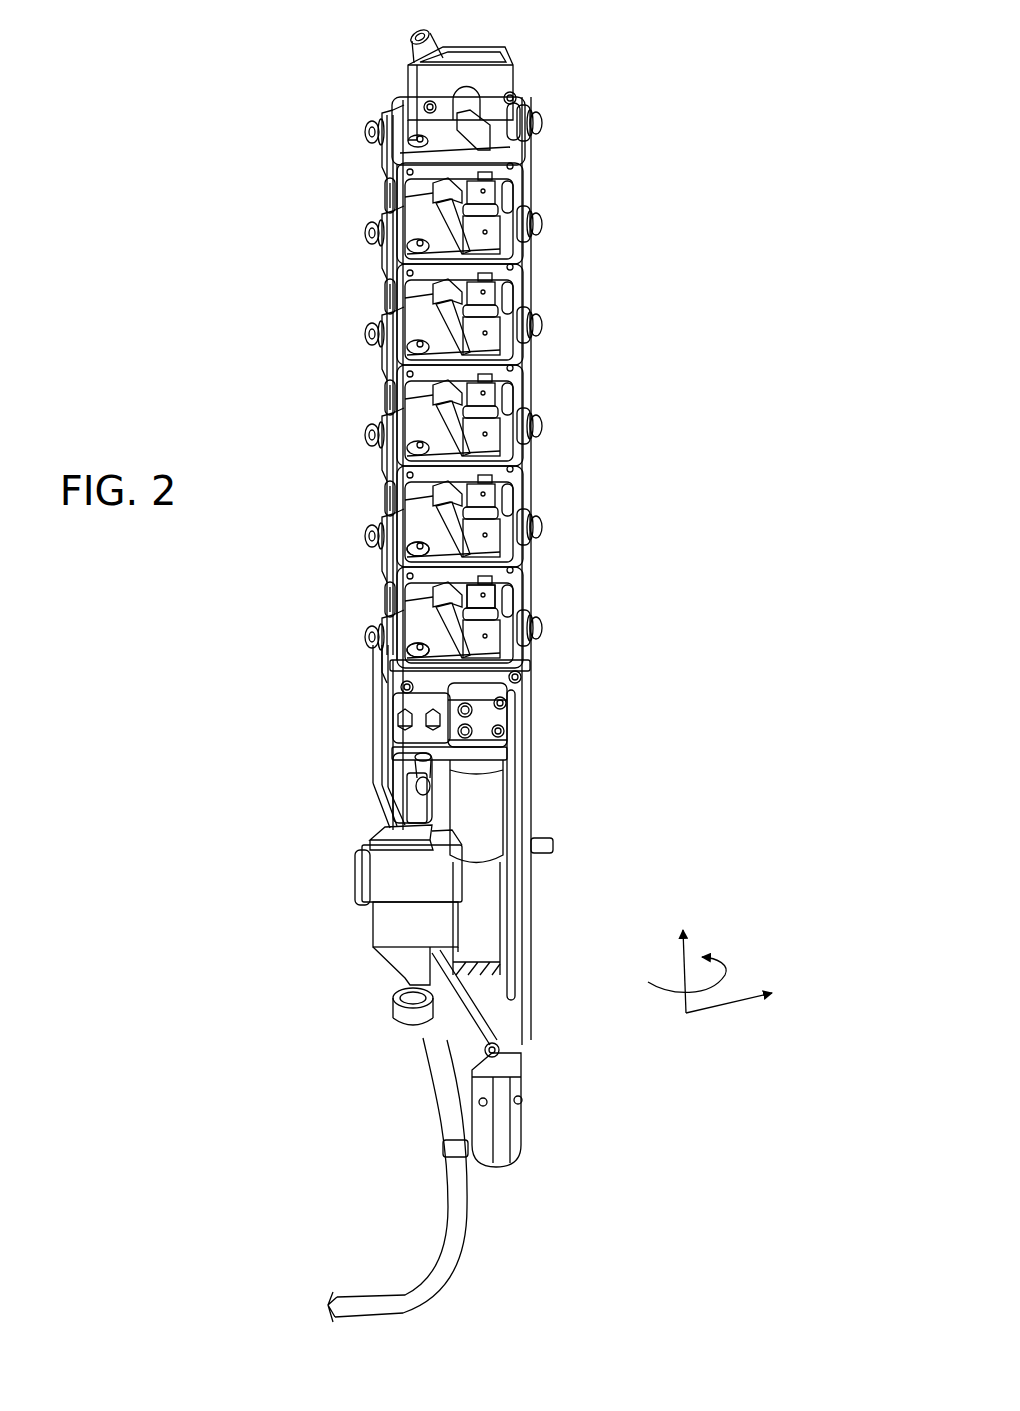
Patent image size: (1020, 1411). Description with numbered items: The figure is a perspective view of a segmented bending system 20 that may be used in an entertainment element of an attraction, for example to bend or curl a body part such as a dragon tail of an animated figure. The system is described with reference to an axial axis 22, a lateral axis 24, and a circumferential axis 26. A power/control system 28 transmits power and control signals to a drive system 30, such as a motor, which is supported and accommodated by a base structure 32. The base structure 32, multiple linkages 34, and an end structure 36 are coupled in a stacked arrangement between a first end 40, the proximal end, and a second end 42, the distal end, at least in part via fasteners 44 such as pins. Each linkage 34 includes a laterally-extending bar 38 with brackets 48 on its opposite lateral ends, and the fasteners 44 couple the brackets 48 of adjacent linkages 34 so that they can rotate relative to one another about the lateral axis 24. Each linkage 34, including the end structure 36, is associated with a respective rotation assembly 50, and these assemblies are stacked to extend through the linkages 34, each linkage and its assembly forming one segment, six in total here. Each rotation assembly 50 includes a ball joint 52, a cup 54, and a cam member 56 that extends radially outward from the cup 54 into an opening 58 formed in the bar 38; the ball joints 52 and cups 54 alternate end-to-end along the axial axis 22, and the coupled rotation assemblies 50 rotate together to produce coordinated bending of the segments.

The bending system 20 is at (673, 78).
The axial axis 22 is at (680, 956).
The lateral axis 24 is at (723, 1005).
The circumferential axis 26 is at (674, 995).
The power/control system 28 is at (345, 925).
The drive system 30 is at (548, 795).
The base structure 32 is at (380, 740).
The linkages 34 is at (383, 157).
The end structure 36 is at (408, 63).
The bar 38 is at (497, 167).
The first end 40 is at (495, 1192).
The second end 42 is at (505, 28).
The fasteners 44 is at (366, 130).
The brackets 48 is at (388, 192).
The rotation assembly 50 is at (540, 688).
The ball joint 52 is at (480, 606).
The cup 54 is at (487, 653).
The cam member 56 is at (422, 582).
The opening 58 is at (430, 553).